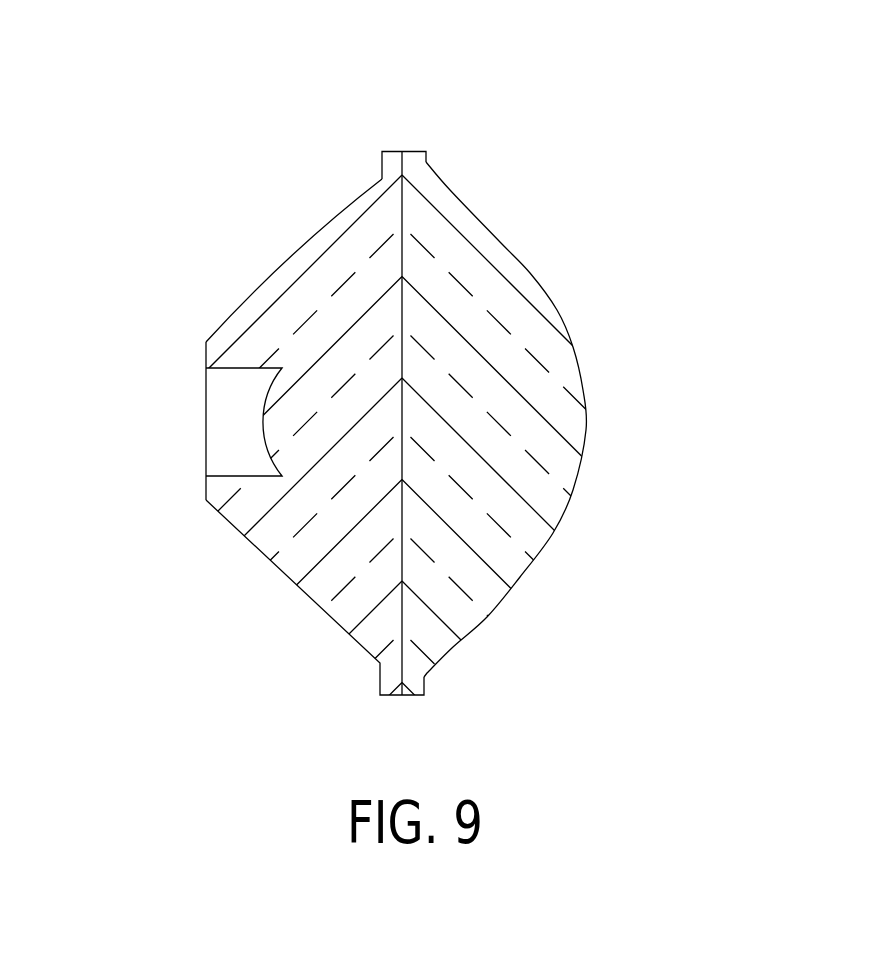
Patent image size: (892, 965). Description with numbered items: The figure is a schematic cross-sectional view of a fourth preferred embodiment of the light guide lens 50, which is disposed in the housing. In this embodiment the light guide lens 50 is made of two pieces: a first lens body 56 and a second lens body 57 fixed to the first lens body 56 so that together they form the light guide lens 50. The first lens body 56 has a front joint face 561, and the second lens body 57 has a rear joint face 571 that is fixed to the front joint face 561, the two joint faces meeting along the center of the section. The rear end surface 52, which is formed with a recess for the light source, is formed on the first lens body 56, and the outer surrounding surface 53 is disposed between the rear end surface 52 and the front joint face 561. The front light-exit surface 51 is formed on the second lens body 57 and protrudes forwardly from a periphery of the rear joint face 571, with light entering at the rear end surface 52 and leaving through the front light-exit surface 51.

The light guide lens 50 is at (448, 135).
The front light-exit surface 51 is at (483, 220).
The rear end surface 52 is at (206, 352).
The outer surrounding surface 53 is at (253, 295).
The first lens body 56 is at (335, 262).
The front joint face 561 is at (403, 245).
The second lens body 57 is at (517, 412).
The rear joint face 571 is at (403, 310).